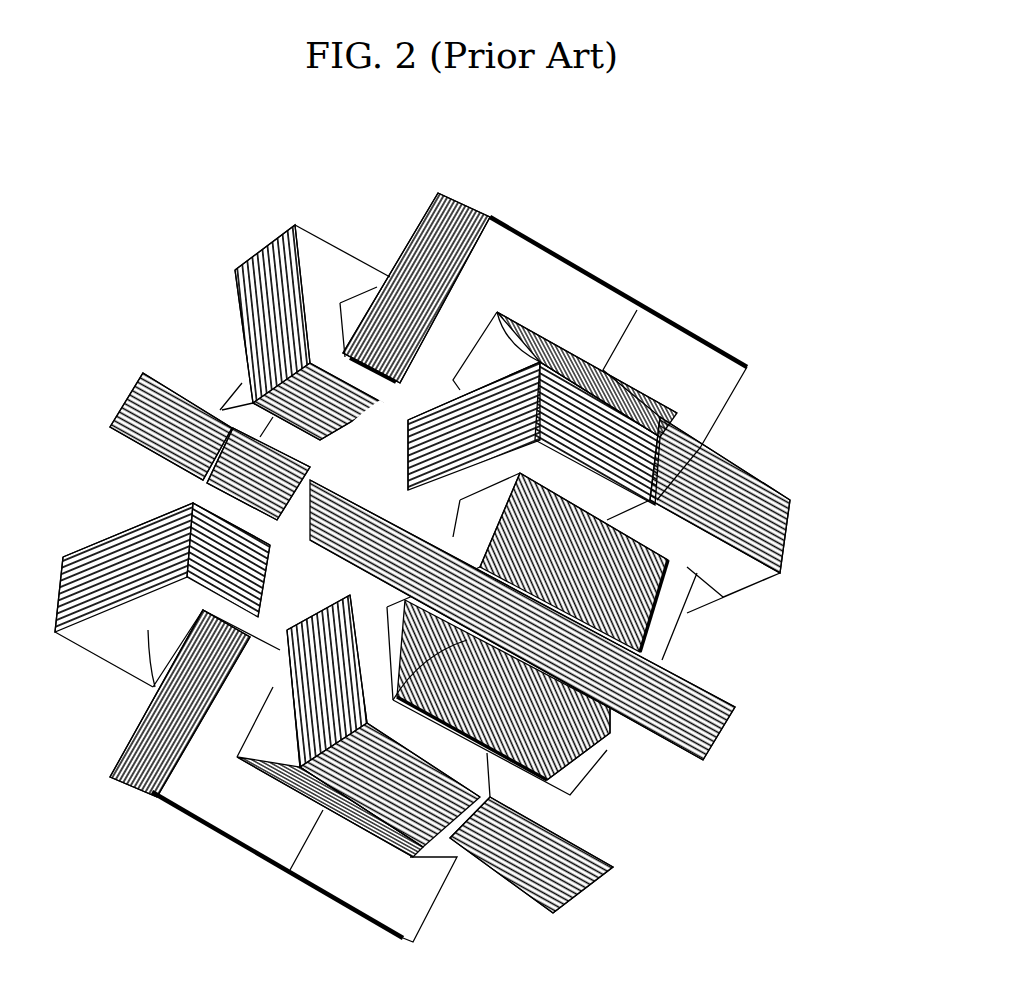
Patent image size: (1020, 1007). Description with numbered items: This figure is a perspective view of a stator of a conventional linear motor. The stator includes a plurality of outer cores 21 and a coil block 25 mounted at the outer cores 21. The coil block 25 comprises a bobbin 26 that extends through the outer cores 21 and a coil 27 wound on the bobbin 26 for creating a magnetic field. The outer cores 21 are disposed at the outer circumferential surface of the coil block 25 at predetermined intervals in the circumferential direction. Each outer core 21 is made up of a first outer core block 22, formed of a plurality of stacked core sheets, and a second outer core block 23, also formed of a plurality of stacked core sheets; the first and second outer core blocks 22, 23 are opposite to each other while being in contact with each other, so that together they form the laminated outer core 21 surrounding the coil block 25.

The outer core 21 is at (882, 450).
The first outer core block 22 is at (640, 428).
The second outer core block 23 is at (752, 486).
The coil block 25 is at (852, 745).
The bobbin 26 is at (668, 637).
The coil 27 is at (653, 582).